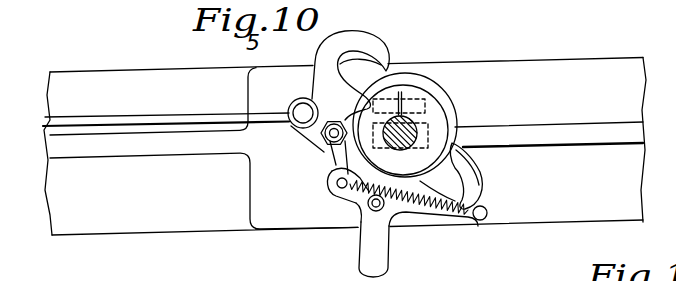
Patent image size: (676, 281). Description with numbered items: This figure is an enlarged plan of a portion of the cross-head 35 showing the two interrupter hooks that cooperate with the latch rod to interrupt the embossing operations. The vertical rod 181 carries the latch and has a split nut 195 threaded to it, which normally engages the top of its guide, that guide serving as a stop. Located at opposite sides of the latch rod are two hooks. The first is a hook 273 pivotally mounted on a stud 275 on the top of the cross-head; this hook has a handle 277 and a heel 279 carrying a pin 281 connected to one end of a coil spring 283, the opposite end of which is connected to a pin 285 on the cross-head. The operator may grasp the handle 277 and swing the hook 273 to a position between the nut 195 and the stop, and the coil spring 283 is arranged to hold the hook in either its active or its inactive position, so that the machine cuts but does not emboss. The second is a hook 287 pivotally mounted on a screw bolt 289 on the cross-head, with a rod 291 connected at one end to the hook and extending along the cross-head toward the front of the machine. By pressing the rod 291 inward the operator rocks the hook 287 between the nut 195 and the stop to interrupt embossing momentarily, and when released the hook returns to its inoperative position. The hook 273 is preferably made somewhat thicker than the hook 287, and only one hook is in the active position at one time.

The cross-head 35 is at (538, 63).
The rod 291 is at (168, 103).
The hook 287 is at (323, 54).
The screw bolt 289 is at (323, 138).
The split nut 195 is at (428, 104).
The vertical rod 181 is at (418, 122).
The pin 281 is at (330, 178).
The heel 279 is at (336, 198).
The handle 277 is at (382, 257).
The stud 275 is at (363, 227).
The coil spring 283 is at (441, 217).
The hook 273 is at (479, 182).
The pin 285 is at (486, 217).